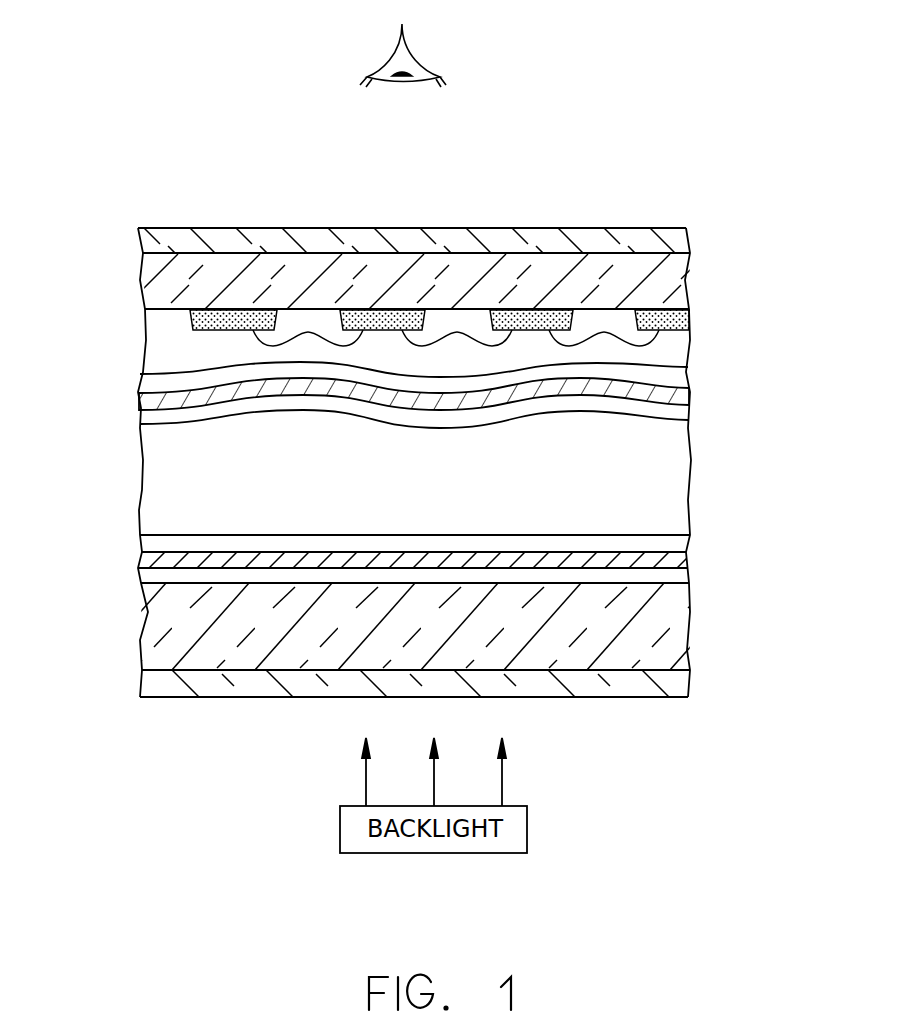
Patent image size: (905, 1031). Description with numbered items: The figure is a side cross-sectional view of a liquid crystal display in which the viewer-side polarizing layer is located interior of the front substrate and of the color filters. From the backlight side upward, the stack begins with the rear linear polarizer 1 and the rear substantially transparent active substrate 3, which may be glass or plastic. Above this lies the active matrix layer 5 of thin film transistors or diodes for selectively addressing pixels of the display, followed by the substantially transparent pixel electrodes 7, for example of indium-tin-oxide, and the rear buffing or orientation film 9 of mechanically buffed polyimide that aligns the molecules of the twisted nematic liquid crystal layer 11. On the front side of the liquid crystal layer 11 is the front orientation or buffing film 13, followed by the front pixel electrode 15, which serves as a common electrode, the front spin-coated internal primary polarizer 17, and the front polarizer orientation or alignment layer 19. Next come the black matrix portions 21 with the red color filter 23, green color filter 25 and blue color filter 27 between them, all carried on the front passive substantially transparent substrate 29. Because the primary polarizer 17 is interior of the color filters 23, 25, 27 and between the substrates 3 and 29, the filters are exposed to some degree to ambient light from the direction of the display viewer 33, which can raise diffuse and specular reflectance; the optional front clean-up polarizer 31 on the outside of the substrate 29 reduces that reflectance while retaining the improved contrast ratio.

The rear linear polarizer 1 is at (630, 682).
The rear substantially transparent active substrate 3 is at (640, 628).
The electrode layer 5 is at (637, 575).
The substantially transparent pixel electrodes 7 is at (183, 563).
The rear buffing or orientation film 9 is at (645, 540).
The twisted nematic liquid crystal layer 11 is at (215, 500).
The front orientation or buffing film 13 is at (643, 408).
The front pixel electrode 15 is at (140, 391).
The front spin-coated internal primary polarizer 17 is at (652, 378).
The front polarizer orientation or alignment layer 19 is at (183, 361).
The black matrix portions 21 is at (205, 320).
The red color filter 23 is at (287, 317).
The green color filter 25 is at (465, 318).
The blue color filter 27 is at (665, 292).
The front passive substantially transparent substrate 29 is at (172, 275).
The front clean-up polarizer 31 is at (220, 235).
The display viewer 33 is at (420, 60).